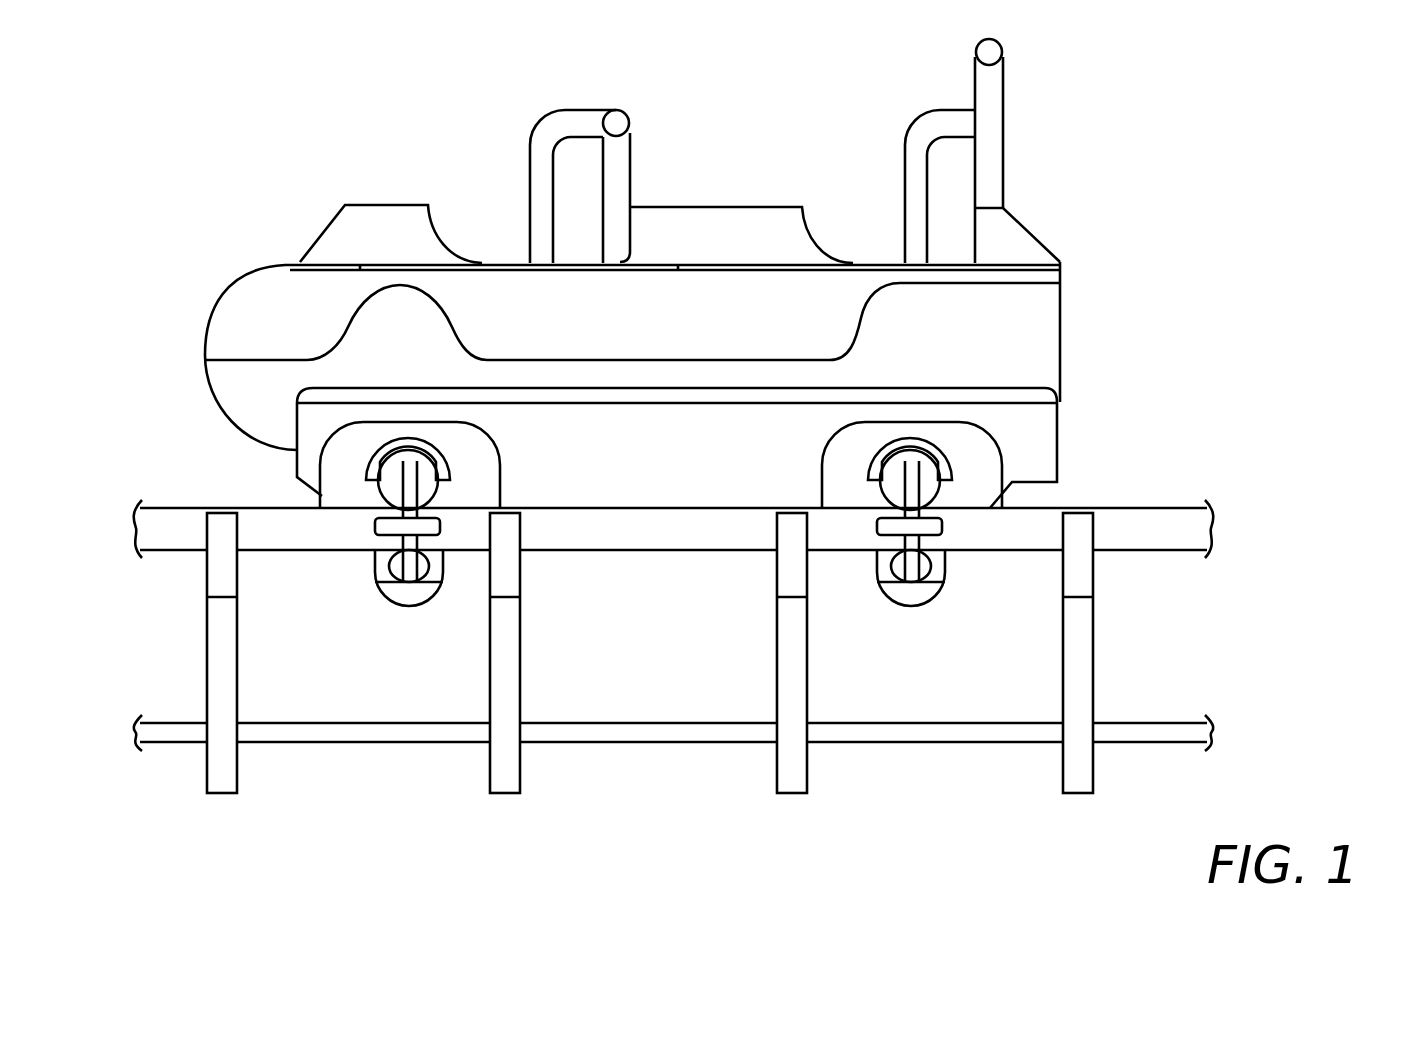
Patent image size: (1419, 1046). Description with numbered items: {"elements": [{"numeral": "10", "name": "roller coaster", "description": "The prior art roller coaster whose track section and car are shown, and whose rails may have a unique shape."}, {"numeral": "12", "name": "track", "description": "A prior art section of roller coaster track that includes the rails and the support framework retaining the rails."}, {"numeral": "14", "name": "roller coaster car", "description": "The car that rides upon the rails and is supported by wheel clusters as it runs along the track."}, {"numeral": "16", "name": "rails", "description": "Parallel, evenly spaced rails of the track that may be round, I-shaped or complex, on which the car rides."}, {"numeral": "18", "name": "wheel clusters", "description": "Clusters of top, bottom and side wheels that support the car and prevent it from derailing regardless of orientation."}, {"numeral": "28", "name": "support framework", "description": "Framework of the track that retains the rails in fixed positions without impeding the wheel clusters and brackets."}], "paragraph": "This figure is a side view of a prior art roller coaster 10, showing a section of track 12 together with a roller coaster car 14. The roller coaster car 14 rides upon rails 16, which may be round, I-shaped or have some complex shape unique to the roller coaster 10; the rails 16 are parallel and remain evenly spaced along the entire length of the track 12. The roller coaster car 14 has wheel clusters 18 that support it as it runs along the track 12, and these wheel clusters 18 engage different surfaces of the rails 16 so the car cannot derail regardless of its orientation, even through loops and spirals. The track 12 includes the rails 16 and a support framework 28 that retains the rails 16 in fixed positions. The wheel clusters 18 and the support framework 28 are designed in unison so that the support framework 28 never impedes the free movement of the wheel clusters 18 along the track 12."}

The ride vehicle system 10 is at (199, 199).
The track 12 is at (1101, 485).
The vehicle body 14 is at (225, 325).
The rail 16 is at (1175, 527).
The wheel assembly 18 is at (958, 443).
The track tie 28 is at (545, 730).